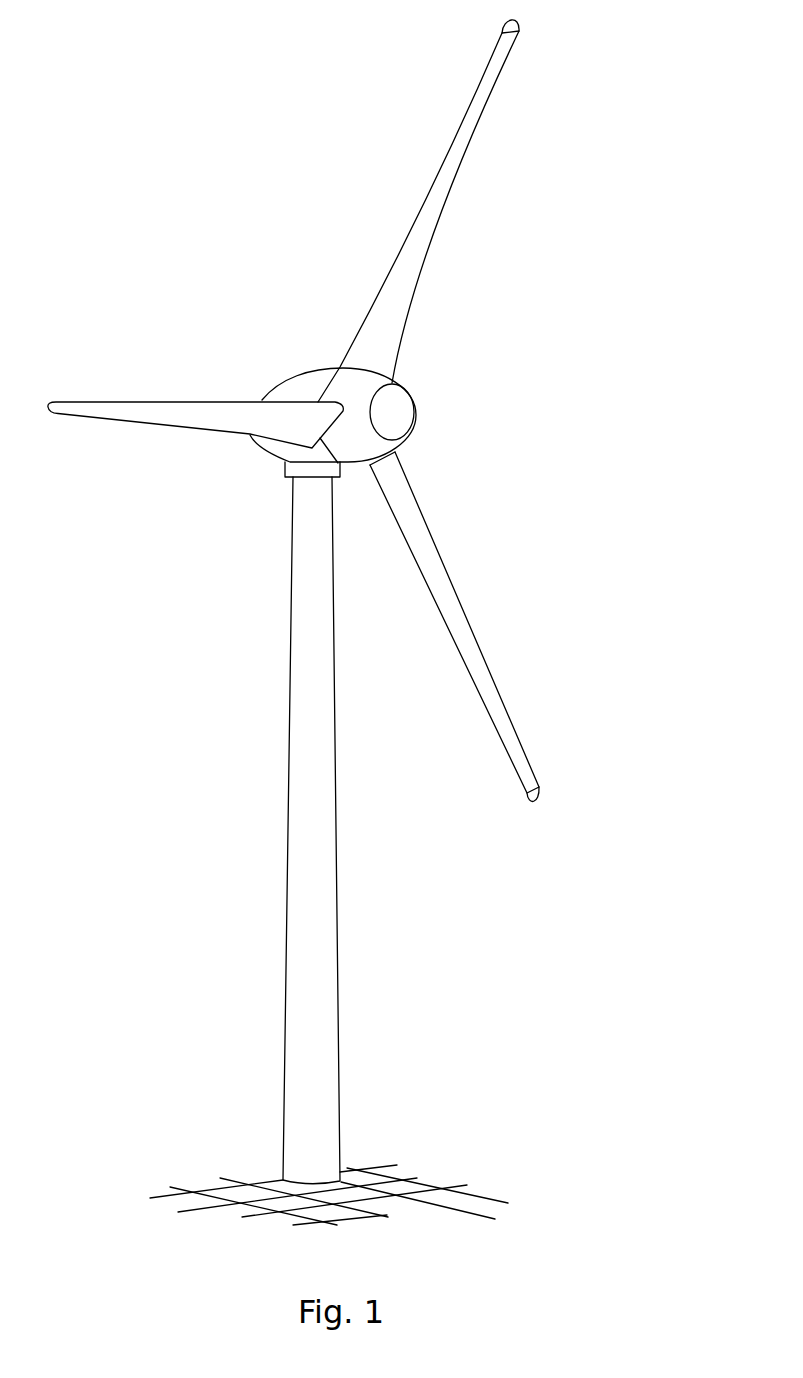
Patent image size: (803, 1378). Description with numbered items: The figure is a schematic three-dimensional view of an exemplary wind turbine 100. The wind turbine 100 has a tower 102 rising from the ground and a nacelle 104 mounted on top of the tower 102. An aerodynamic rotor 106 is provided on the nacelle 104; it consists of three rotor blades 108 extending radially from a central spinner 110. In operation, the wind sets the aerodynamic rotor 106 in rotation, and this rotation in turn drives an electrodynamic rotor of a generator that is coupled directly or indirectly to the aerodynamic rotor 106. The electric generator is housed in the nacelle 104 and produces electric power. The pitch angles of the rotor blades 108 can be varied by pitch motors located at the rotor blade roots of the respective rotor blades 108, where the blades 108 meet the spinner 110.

The wind turbine 100 is at (243, 550).
The tower 102 is at (318, 938).
The nacelle 104 is at (305, 388).
The aerodynamic rotor 106 is at (492, 329).
The rotor blades 108 is at (463, 157).
The spinner 110 is at (397, 412).